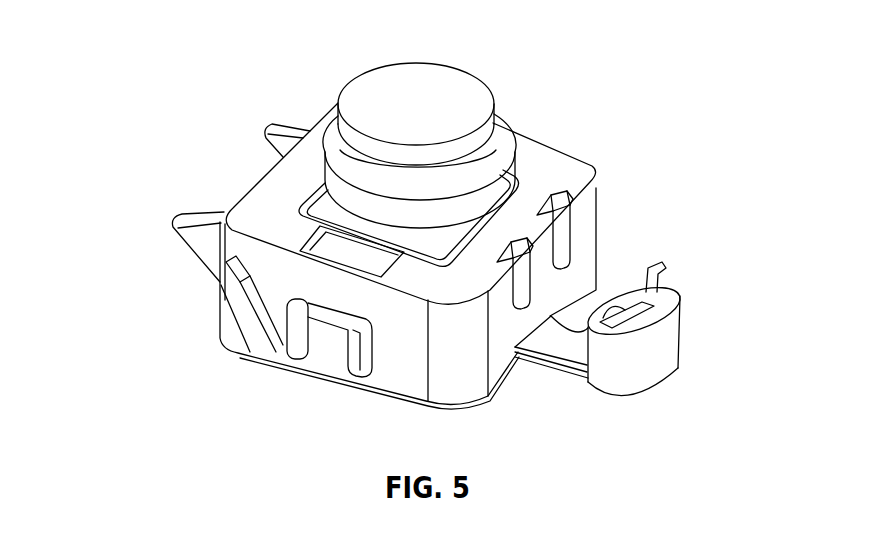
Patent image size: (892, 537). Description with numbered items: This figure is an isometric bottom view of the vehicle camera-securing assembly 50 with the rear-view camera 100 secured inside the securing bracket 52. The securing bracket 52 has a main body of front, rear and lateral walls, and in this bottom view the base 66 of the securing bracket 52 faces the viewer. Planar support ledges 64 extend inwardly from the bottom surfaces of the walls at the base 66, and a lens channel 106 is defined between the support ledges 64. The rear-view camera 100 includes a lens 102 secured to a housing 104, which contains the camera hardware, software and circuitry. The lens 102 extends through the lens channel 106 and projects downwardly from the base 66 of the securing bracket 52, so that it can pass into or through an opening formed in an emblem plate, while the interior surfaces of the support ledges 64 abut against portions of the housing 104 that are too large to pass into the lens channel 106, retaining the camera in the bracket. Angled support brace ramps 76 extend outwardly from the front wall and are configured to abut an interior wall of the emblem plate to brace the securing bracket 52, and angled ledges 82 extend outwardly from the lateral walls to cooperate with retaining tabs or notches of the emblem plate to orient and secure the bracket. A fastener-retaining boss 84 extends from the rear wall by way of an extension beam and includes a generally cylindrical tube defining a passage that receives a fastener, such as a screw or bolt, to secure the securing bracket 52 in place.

The vehicle camera-securing assembly 50 is at (558, 117).
The securing bracket 52 is at (217, 288).
The planar support ledges 64 is at (292, 188).
The base 66 is at (565, 142).
The angled support brace ramps 76 is at (285, 127).
The angled ledges 82 is at (240, 355).
The fastener-retaining boss 84 is at (680, 353).
The rear-view camera 100 is at (506, 119).
The lens 102 is at (425, 93).
The housing 104 is at (475, 193).
The lens channel 106 is at (228, 212).